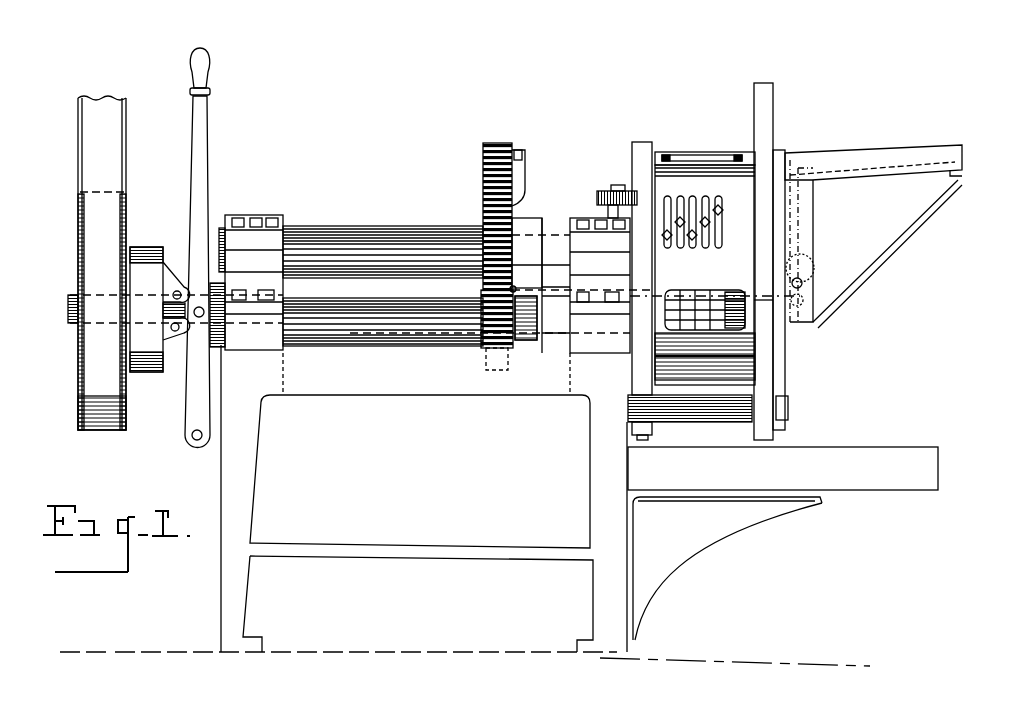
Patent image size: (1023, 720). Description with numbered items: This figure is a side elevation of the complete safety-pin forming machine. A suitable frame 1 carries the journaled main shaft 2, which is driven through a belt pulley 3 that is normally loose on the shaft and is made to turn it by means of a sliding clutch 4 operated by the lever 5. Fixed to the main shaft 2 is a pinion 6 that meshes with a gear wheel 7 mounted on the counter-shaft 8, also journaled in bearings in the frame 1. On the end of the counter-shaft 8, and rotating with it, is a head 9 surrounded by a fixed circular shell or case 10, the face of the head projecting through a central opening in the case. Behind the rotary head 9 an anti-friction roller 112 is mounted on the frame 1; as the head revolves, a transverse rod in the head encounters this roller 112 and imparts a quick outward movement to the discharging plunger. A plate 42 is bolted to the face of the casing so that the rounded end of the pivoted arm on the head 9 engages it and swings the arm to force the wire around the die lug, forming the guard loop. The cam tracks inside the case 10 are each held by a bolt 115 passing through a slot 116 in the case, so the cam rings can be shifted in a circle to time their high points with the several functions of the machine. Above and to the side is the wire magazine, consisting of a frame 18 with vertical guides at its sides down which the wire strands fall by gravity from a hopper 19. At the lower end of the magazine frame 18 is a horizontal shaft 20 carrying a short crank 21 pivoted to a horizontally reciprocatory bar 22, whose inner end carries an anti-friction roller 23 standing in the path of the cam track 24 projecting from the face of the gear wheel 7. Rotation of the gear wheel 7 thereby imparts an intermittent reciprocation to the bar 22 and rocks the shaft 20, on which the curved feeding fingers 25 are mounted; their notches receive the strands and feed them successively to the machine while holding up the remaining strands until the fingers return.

The frame 1 is at (408, 396).
The main shaft 2 is at (355, 335).
The belt pulley 3 is at (77, 223).
The sliding clutch 4 is at (153, 262).
The lever 5 is at (198, 147).
The pinion 6 is at (482, 346).
The gear wheel 7 is at (484, 153).
The counter-shaft 8 is at (400, 236).
The head 9 is at (734, 300).
The circular shell or case 10 is at (684, 158).
The magazine frame 18 is at (814, 220).
The hopper 19 is at (853, 152).
The horizontal shaft 20 is at (803, 283).
The crank 21 is at (803, 303).
The reciprocatory bar 22 is at (600, 296).
The anti-friction roller 23 is at (486, 284).
The cam track 24 is at (522, 157).
The curved feeding fingers 25 is at (814, 268).
The plate 42 is at (788, 381).
The anti-friction roller 112 is at (603, 194).
The bolt 115 is at (720, 213).
The slot 116 is at (719, 246).